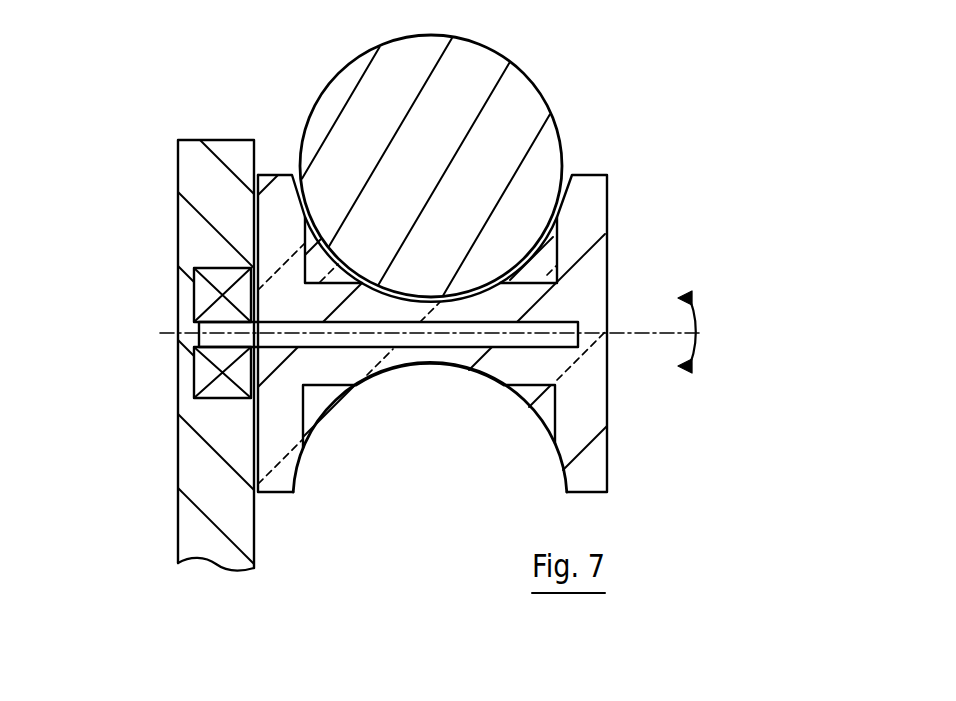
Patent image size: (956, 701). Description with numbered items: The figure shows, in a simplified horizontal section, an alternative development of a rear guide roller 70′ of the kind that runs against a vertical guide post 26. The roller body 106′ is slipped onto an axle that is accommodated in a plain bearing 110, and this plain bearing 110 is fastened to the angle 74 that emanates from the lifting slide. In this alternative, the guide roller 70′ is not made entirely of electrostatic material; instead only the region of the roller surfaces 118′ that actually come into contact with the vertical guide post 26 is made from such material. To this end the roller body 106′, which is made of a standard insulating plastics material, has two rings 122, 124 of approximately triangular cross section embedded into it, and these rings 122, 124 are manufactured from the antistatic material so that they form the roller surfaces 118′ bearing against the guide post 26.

The vertical guide post 26 is at (524, 66).
The rear guide roller 70′ is at (619, 188).
The angle 74 is at (197, 453).
The roller body 106′ is at (577, 418).
The plain bearing 110 is at (197, 373).
The roller surfaces 118′ is at (347, 403).
The ring 122 is at (310, 407).
The ring 124 is at (525, 407).